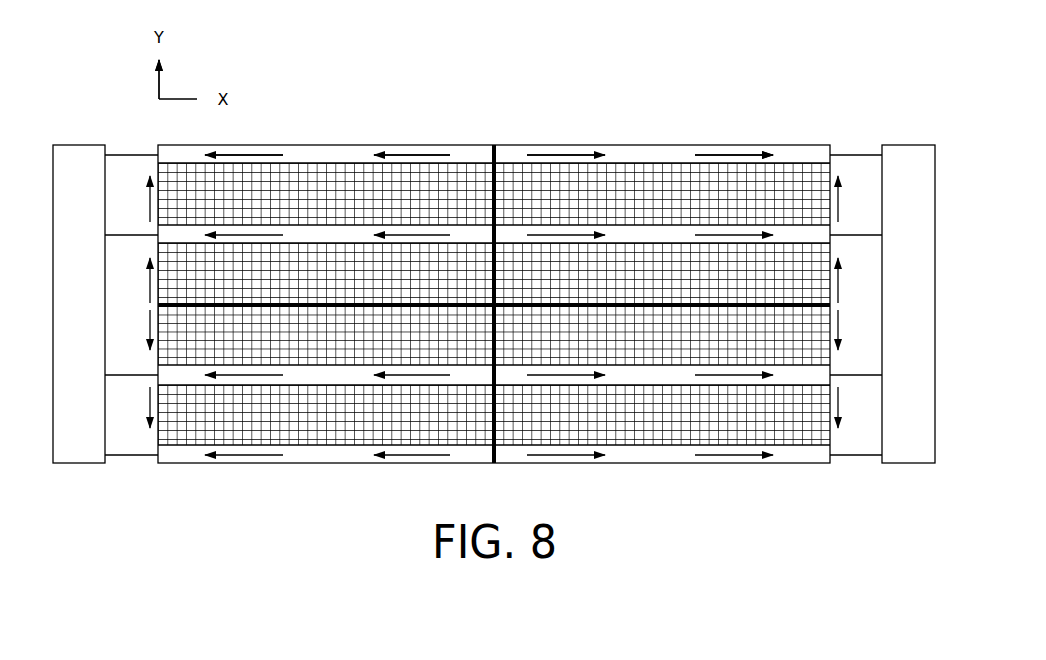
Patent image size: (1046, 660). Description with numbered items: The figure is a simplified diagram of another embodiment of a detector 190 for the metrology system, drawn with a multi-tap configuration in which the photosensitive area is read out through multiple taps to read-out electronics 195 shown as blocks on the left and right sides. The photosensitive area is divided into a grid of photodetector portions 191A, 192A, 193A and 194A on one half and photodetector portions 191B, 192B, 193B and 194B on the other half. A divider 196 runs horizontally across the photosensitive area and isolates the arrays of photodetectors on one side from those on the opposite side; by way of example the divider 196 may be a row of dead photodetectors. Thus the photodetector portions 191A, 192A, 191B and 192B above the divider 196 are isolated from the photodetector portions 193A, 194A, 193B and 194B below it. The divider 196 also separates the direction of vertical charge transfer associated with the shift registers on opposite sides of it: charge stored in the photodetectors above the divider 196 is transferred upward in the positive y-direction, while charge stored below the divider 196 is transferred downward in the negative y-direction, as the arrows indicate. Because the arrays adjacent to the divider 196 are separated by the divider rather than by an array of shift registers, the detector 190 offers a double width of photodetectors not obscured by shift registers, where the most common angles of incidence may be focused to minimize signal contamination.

The detector 190 is at (880, 107).
The photodetector portion 191A is at (326, 194).
The photodetector portion 191B is at (662, 194).
The photodetector portion 192A is at (326, 274).
The photodetector portion 192B is at (662, 274).
The photodetector portion 193A is at (326, 335).
The photodetector portion 193B is at (662, 335).
The photodetector portion 194A is at (326, 415).
The photodetector portion 194B is at (662, 415).
The read-out electronics 195 is at (64, 313).
The divider 196 is at (158, 305).